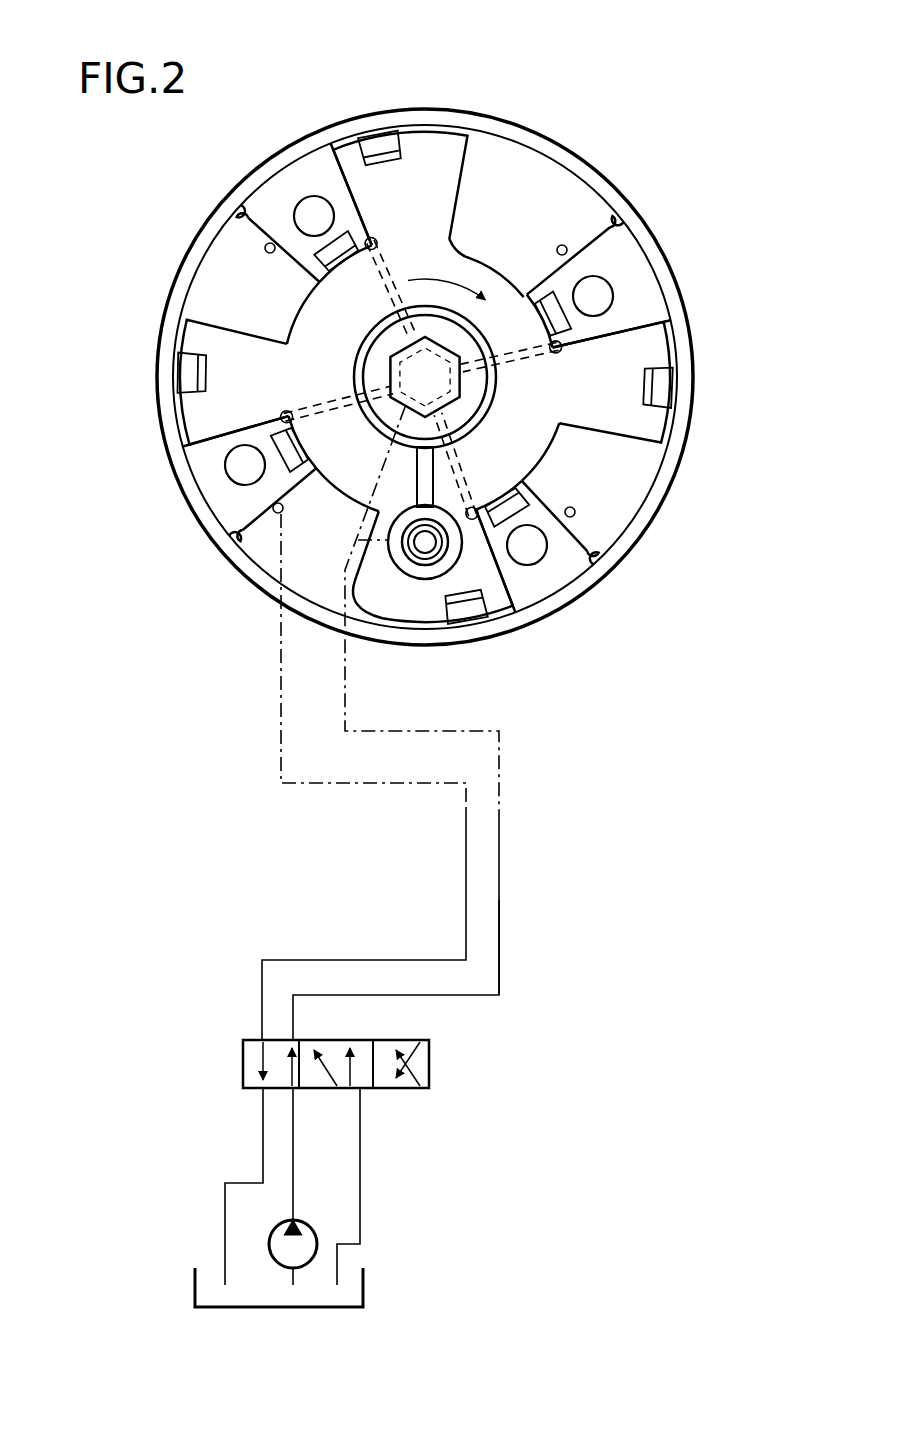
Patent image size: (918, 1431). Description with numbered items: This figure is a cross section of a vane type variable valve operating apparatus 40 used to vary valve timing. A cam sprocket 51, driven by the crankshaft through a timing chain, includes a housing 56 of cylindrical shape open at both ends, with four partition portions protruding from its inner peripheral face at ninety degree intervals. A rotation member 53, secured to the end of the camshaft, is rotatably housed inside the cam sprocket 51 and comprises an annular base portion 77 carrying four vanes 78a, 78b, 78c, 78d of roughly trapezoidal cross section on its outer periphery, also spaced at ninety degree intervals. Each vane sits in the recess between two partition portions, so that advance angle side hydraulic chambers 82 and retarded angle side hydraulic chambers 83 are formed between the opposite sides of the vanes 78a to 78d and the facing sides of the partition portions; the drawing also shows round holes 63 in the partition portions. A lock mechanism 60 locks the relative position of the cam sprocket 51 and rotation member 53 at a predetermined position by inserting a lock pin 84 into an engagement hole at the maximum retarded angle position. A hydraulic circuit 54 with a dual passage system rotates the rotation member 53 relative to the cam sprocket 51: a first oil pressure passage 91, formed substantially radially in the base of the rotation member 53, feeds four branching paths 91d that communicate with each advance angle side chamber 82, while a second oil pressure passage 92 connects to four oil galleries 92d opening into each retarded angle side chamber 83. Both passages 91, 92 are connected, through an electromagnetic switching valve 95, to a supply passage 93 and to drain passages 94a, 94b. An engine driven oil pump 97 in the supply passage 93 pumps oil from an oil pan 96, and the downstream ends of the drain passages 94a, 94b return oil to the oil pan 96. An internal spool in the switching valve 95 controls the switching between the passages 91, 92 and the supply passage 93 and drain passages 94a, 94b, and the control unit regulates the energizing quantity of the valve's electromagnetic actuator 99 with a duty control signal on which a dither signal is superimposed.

The variable valve operating apparatus 40 is at (672, 88).
The cam sprocket 51 is at (532, 127).
The rotation member 53 is at (556, 444).
The hydraulic circuit 54 is at (504, 940).
The housing 56 is at (566, 132).
The lock mechanism 60 is at (466, 553).
The bolt holes 63 is at (283, 228).
The annular base portion 77 is at (275, 512).
The first vane 78a is at (170, 392).
The second vane 78b is at (432, 160).
The third vane 78c is at (652, 423).
The fourth vane 78d is at (380, 593).
The advance angle side hydraulic chamber 82 is at (333, 150).
The retarded angle side hydraulic chamber 83 is at (264, 302).
The lock pin 84 is at (425, 548).
The first oil pressure passage 91 is at (500, 858).
The branching paths 91d is at (345, 320).
The second oil pressure passage 92 is at (466, 860).
The oil galleries 92d is at (265, 245).
The supply passage 93 is at (294, 1100).
The drain passage 94a is at (263, 1116).
The drain passage 94b is at (360, 1172).
The electromagnetic switching valve 95 is at (338, 1038).
The oil pan 96 is at (195, 1295).
The oil pump 97 is at (300, 1222).
The electromagnetic actuator 99 is at (412, 1040).